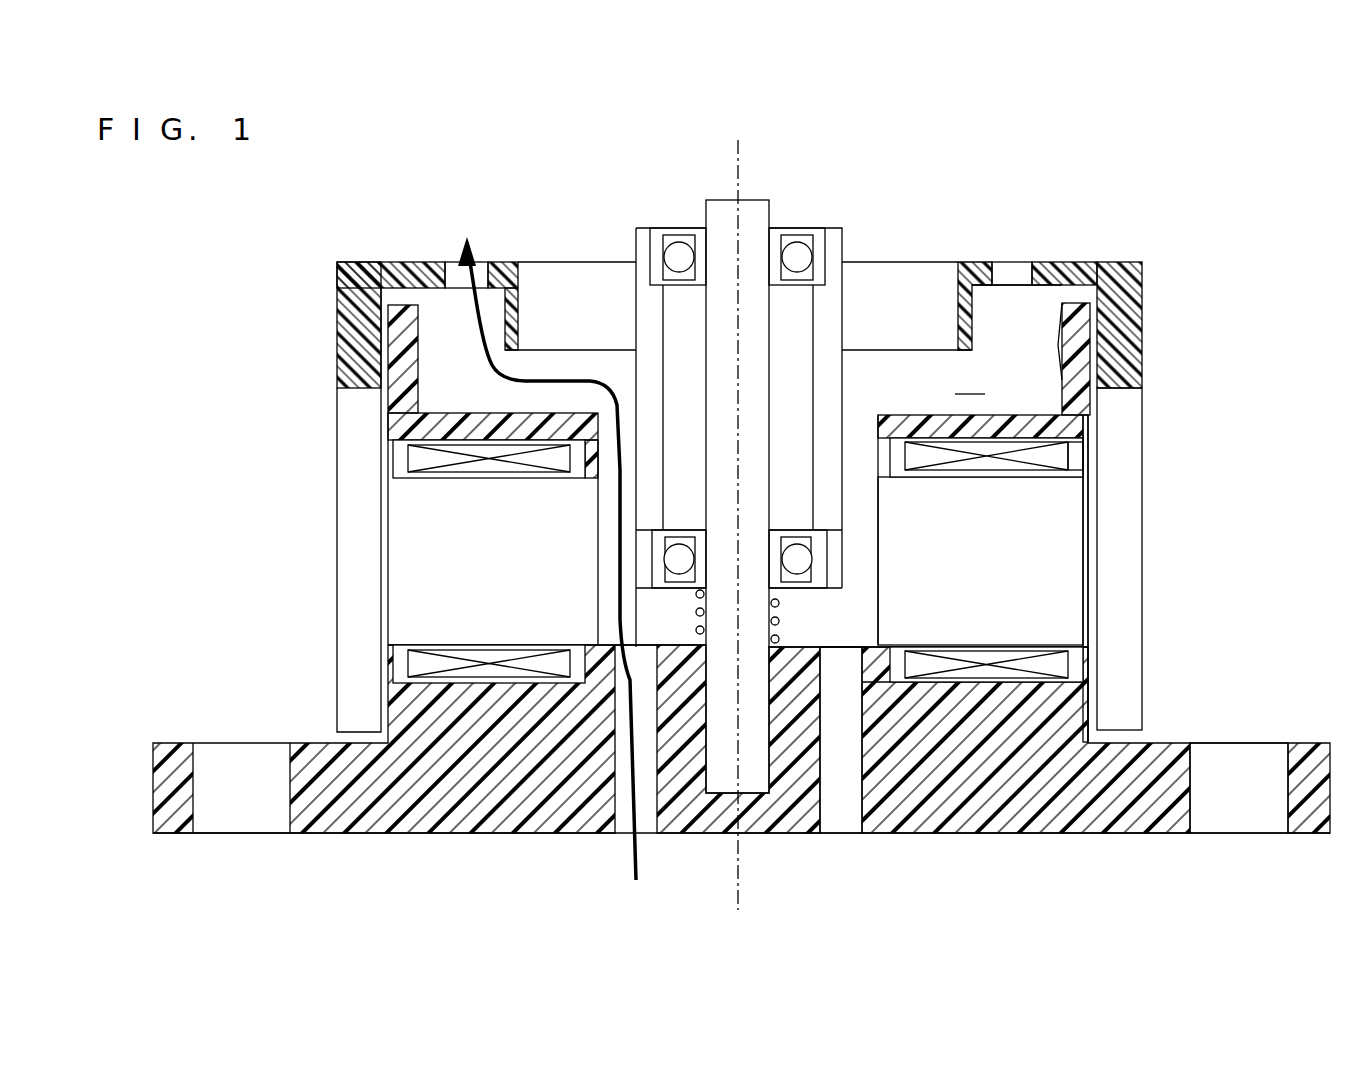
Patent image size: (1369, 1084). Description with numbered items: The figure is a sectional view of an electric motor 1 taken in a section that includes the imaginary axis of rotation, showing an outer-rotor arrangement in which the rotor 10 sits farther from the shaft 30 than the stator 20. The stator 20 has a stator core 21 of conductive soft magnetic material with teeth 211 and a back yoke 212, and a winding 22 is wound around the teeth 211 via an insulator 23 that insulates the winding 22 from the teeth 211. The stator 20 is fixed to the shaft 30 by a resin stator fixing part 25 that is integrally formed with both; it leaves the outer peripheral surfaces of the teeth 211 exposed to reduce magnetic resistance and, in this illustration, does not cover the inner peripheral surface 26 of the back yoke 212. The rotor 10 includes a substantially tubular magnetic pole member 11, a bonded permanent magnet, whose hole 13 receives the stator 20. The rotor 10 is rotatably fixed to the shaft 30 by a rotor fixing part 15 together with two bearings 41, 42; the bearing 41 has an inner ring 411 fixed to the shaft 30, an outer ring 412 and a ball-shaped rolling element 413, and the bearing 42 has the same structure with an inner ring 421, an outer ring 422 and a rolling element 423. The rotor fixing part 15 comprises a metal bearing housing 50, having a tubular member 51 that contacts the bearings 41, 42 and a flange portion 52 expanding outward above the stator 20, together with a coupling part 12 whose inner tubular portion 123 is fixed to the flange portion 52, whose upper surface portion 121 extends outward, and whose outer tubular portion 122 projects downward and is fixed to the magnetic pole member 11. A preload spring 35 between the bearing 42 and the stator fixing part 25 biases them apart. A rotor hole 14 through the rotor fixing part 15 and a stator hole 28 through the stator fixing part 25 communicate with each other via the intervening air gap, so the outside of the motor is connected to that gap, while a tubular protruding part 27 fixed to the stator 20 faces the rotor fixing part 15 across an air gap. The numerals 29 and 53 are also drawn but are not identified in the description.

The electric motor 1 is at (491, 222).
The rotor 10 is at (1192, 528).
The magnetic pole member 11 is at (1125, 703).
The coupling part 12 is at (1152, 202).
The upper surface portion 121 is at (1048, 284).
The outer tubular portion 122 is at (1114, 312).
The inner tubular portion 123 is at (966, 300).
The hole 13 is at (1090, 395).
The rotor hole 14 is at (1027, 273).
The rotor fixing part 15 is at (1088, 152).
The stator 20 is at (1025, 700).
The stator core 21 is at (1238, 563).
The teeth 211 is at (1063, 586).
The back yoke 212 is at (892, 620).
The winding 22 is at (1062, 459).
The insulator 23 is at (1090, 470).
The stator fixing part 25 is at (908, 430).
The inner peripheral surface 26 is at (878, 513).
The protruding part 27 is at (1062, 378).
The stator hole 28 is at (858, 712).
The mounting hole 29 is at (1288, 790).
The shaft 30 is at (718, 200).
The preload spring 35 is at (805, 648).
The bearing 41 is at (818, 240).
The inner ring 411 is at (688, 230).
The outer ring 412 is at (664, 245).
The rolling element 413 is at (648, 262).
The bearing 42 is at (818, 580).
The inner ring 421 is at (663, 540).
The outer ring 422 is at (668, 552).
The rolling element 423 is at (668, 577).
The bearing housing 50 is at (952, 214).
The tubular member 51 is at (830, 392).
The flange portion 52 is at (929, 278).
The bearing spacer 53 is at (813, 466).